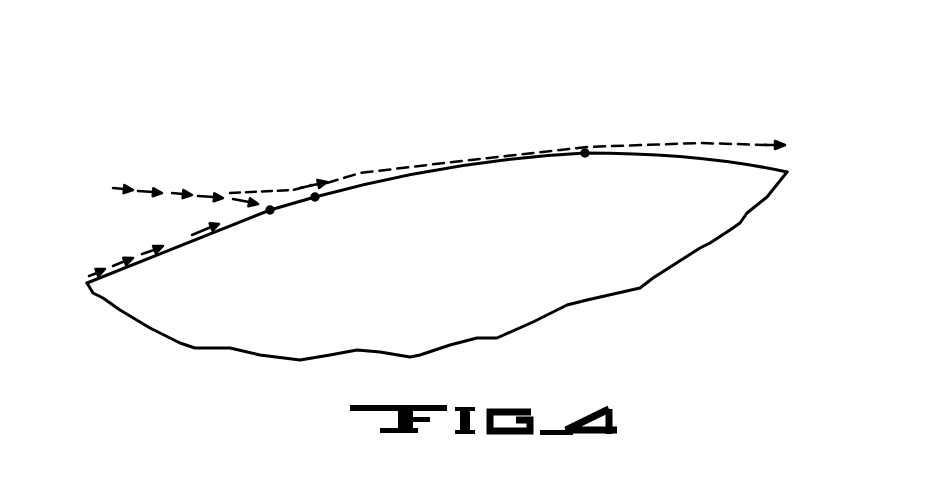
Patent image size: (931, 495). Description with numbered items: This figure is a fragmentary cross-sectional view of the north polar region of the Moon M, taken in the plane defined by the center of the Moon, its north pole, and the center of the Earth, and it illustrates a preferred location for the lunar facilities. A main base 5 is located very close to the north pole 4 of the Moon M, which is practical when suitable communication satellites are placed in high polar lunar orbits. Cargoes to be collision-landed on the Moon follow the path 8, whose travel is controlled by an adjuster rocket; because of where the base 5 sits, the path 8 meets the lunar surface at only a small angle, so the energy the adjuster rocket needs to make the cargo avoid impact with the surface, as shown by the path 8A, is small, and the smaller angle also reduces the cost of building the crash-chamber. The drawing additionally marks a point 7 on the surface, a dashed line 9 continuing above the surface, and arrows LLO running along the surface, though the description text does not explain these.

The Moon M is at (455, 262).
The path 8 is at (170, 188).
The path 8A is at (300, 190).
The outer flow streamline 9 is at (727, 143).
The surface flow arrows LLO is at (167, 240).
The main base 5 is at (270, 213).
The transition point 7 is at (315, 200).
The north pole 4 is at (585, 157).